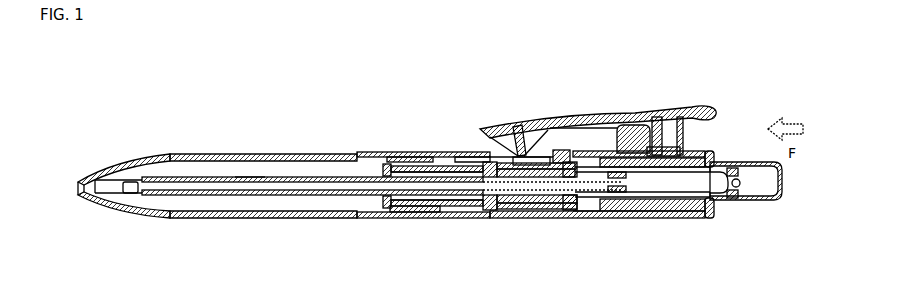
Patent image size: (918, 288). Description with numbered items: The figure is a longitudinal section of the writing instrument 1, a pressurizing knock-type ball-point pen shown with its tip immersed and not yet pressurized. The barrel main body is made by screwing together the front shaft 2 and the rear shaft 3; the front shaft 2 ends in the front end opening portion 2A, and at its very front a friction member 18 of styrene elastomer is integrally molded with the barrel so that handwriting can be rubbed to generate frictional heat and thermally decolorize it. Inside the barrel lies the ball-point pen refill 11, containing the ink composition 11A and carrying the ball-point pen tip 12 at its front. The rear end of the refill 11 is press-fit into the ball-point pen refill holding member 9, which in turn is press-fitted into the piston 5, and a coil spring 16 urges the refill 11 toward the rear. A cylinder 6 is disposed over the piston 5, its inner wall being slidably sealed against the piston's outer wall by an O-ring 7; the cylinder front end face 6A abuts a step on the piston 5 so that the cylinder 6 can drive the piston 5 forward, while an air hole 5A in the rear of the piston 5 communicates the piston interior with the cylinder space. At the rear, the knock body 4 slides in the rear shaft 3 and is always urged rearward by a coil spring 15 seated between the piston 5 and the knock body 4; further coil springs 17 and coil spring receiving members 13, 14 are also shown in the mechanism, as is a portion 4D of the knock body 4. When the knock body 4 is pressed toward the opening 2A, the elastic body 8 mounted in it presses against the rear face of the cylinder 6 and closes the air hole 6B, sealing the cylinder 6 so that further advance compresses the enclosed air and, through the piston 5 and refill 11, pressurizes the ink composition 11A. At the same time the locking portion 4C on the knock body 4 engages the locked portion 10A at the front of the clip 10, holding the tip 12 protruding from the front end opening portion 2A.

The writing instrument 1 is at (301, 154).
The front shaft 2 is at (218, 154).
The front end opening portion 2A is at (78, 186).
The rear shaft 3 is at (440, 154).
The knock body 4 is at (766, 198).
The locking portion 4C is at (560, 150).
The guide portion of knock member 4D is at (548, 157).
The piston 5 is at (540, 197).
The air hole 5A is at (655, 207).
The cylinder 6 is at (703, 205).
The cylinder front end face 6A is at (578, 219).
The air hole 6B is at (733, 168).
The O-ring 7 is at (621, 187).
The elastic body 8 is at (738, 198).
The ball-point pen refill holding member 9 is at (507, 210).
The clip 10 is at (620, 110).
The locked portion 10A is at (517, 157).
The ball-point pen refill 11 is at (230, 196).
The ink composition 11A is at (251, 181).
The ball-point pen tip 12 is at (92, 190).
The coil spring receiving member 13 is at (477, 162).
The coil spring receiving member 14 is at (400, 207).
The coil spring 15 is at (560, 203).
The coil spring 16 is at (473, 203).
The coil spring 17 is at (683, 150).
The friction member 18 is at (89, 173).